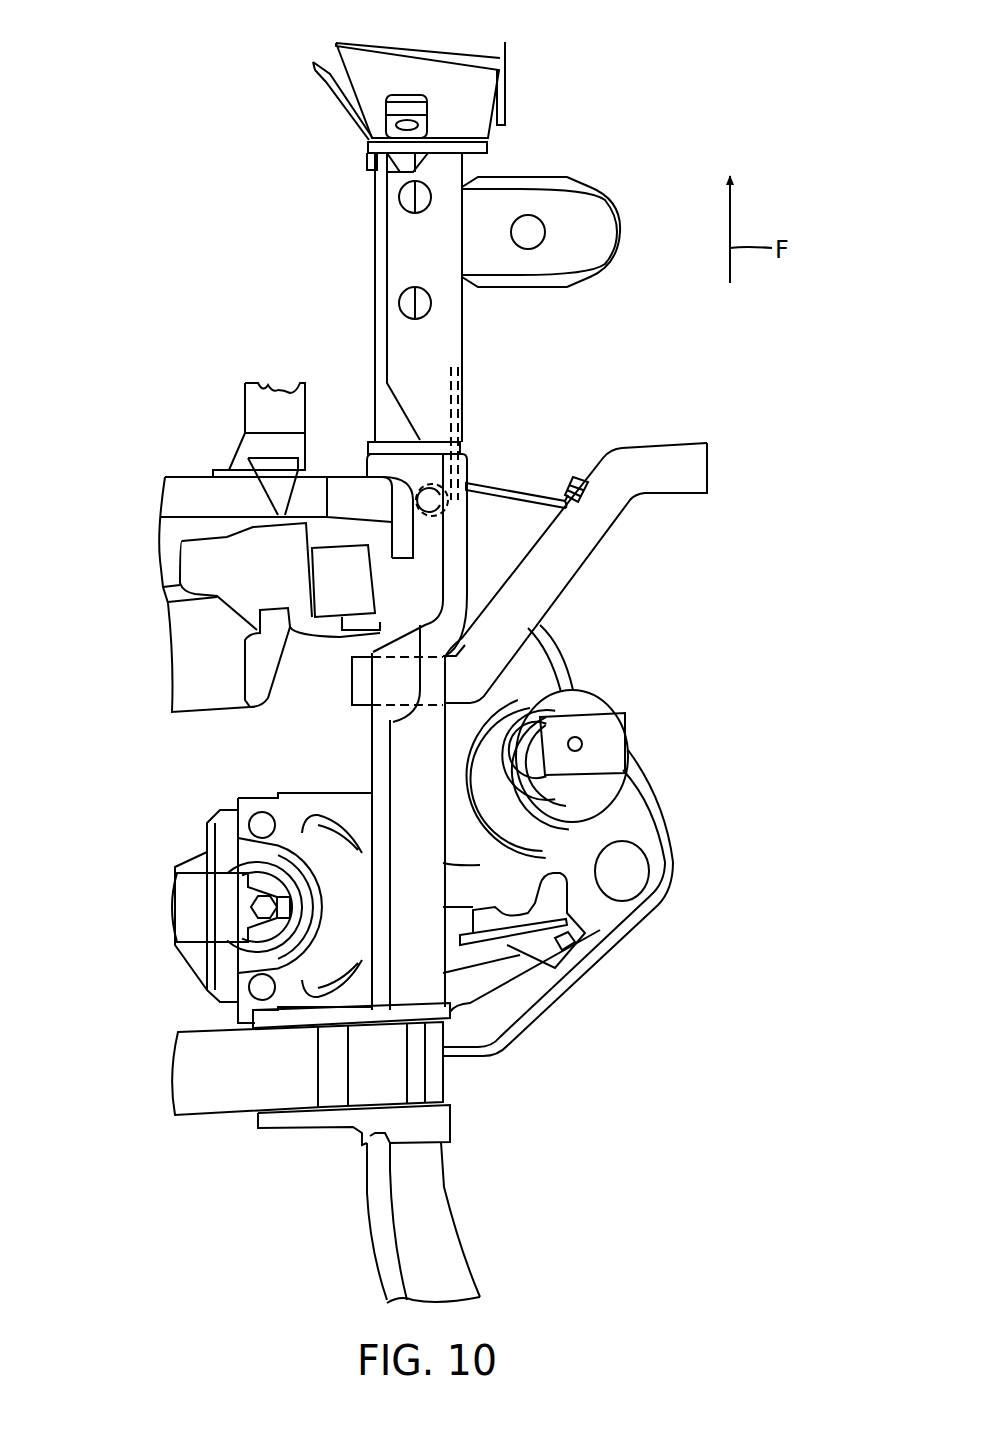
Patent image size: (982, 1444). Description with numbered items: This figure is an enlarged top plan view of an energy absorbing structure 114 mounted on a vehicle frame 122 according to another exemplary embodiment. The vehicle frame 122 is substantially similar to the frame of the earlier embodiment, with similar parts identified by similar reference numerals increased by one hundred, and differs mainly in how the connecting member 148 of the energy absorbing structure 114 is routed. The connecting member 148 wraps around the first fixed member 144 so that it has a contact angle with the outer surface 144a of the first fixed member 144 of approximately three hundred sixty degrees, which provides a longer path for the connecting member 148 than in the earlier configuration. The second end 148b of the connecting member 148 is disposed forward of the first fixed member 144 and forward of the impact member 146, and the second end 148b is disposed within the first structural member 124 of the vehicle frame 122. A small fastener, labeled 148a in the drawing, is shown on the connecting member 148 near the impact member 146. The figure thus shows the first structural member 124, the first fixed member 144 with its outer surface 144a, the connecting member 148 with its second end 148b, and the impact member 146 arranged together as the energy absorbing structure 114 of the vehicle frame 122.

The vehicle frame 122 is at (186, 345).
The first structural member 124 is at (373, 227).
The second end of the connecting member 148b is at (451, 365).
The first fixed member 144 is at (416, 499).
The outer surface of the first fixed member 144a is at (447, 510).
The connecting member 148 is at (510, 487).
The release lever fastener 148a is at (586, 480).
The impact member 146 is at (607, 537).
The energy absorbing structure 114 is at (568, 595).